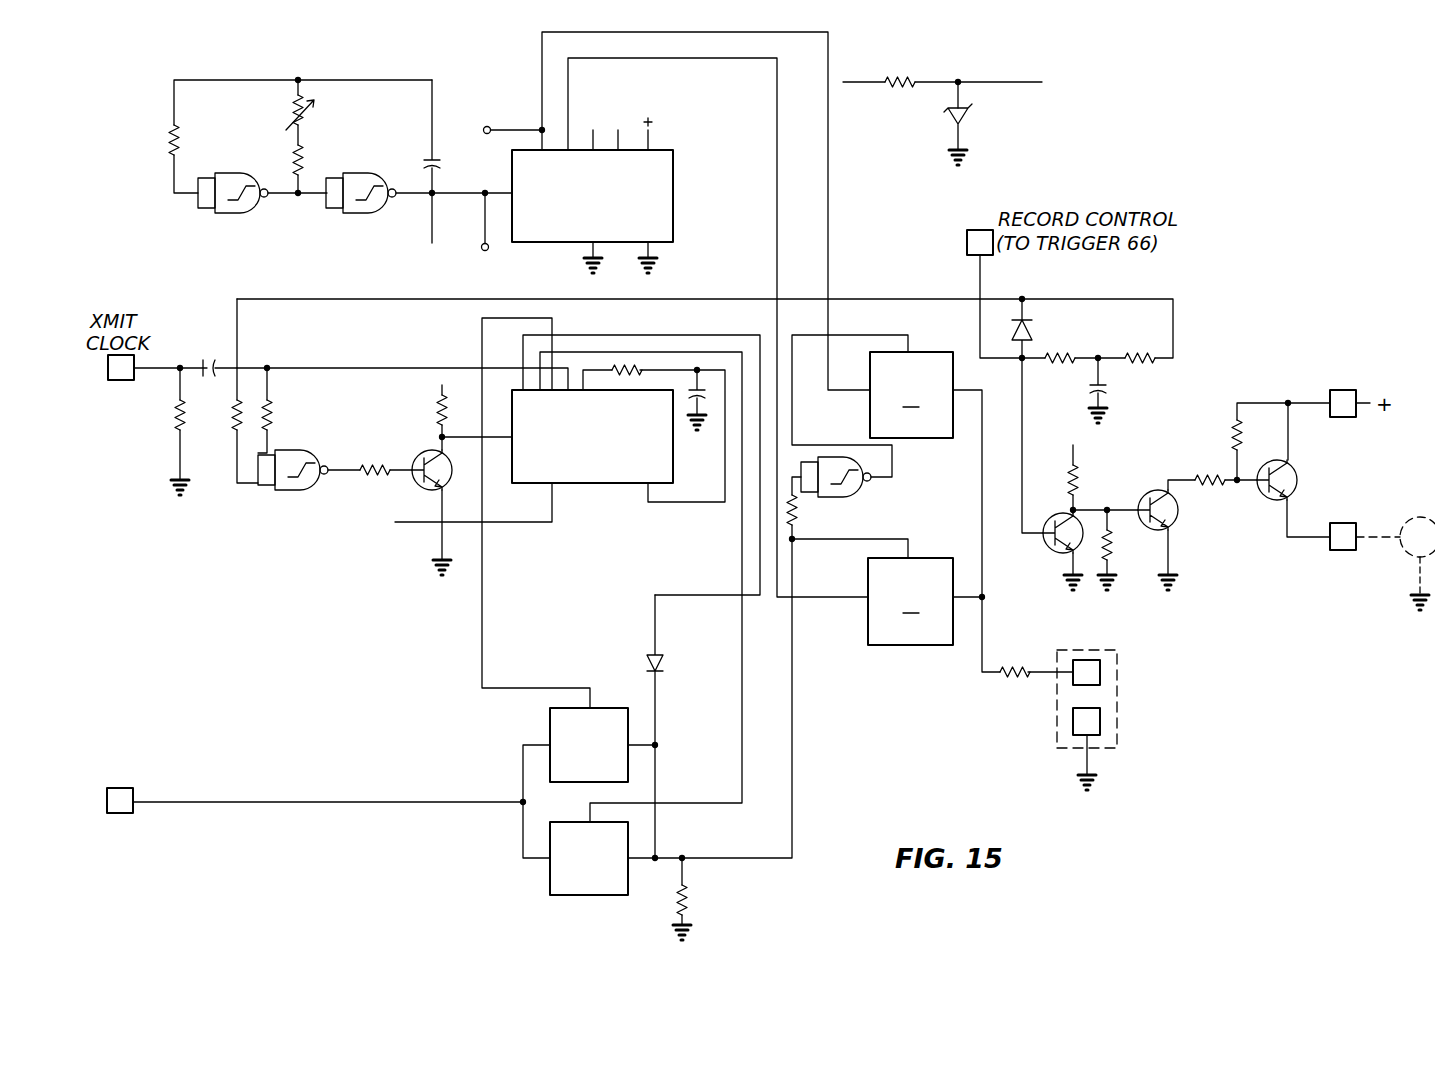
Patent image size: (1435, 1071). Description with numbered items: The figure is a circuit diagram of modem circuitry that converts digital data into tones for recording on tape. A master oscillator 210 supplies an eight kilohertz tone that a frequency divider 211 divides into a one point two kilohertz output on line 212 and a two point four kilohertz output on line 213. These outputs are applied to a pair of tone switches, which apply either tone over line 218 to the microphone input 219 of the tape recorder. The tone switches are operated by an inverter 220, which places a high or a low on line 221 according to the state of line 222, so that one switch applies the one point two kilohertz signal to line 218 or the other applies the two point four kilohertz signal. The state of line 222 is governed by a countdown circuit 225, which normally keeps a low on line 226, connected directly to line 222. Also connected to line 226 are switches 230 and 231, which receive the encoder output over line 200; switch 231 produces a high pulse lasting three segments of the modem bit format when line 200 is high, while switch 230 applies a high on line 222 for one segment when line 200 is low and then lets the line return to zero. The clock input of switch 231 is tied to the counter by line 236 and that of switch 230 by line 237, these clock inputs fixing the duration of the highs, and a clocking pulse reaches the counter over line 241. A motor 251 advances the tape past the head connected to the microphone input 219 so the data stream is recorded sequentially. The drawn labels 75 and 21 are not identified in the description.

The line 200 is at (272, 800).
The master oscillator 210 is at (380, 135).
The frequency divider 211 is at (673, 185).
The line 212 is at (777, 211).
The line 213 is at (828, 210).
The line 218 is at (990, 672).
The microphone input 219 is at (1092, 666).
The inverter 220 is at (856, 497).
The line 221 is at (894, 335).
The line 222 is at (792, 668).
The countdown circuit 225 is at (602, 483).
The line 226 is at (658, 697).
The switch 230 is at (550, 882).
The switch 231 is at (550, 722).
The line 236 is at (482, 568).
The line 237 is at (742, 728).
The line 241 is at (295, 368).
The motor 251 is at (1403, 527).
The 1.2 kHz switch circuit 75 is at (888, 745).
The switch 21 is at (905, 526).